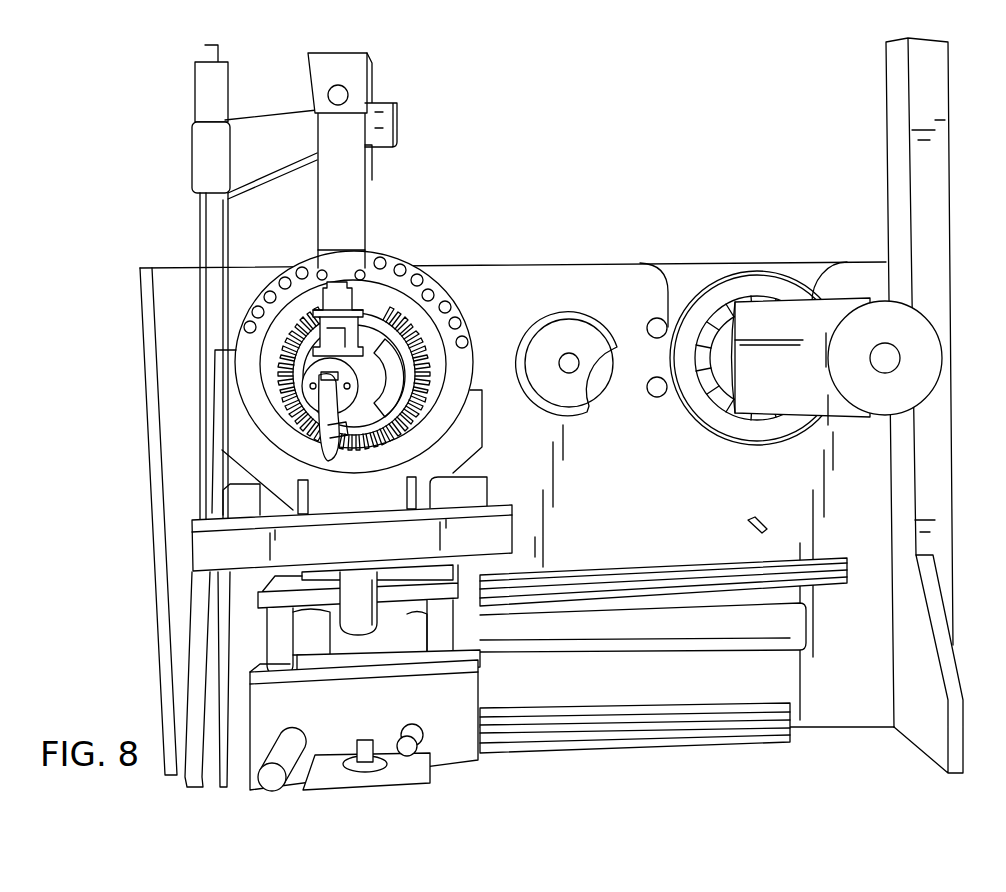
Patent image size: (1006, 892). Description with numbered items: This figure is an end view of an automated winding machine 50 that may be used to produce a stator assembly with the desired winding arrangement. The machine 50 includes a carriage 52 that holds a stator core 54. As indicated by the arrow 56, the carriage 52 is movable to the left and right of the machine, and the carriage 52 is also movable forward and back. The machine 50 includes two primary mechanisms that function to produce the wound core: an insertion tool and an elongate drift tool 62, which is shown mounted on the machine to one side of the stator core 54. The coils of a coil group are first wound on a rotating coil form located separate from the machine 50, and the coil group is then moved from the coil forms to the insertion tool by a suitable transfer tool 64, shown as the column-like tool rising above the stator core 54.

The machine 50 is at (812, 157).
The carriage 52 is at (505, 454).
The stator core 54 is at (447, 367).
The arrow 56 is at (570, 687).
The drift tool 62 is at (851, 425).
The transfer tool 64 is at (370, 207).